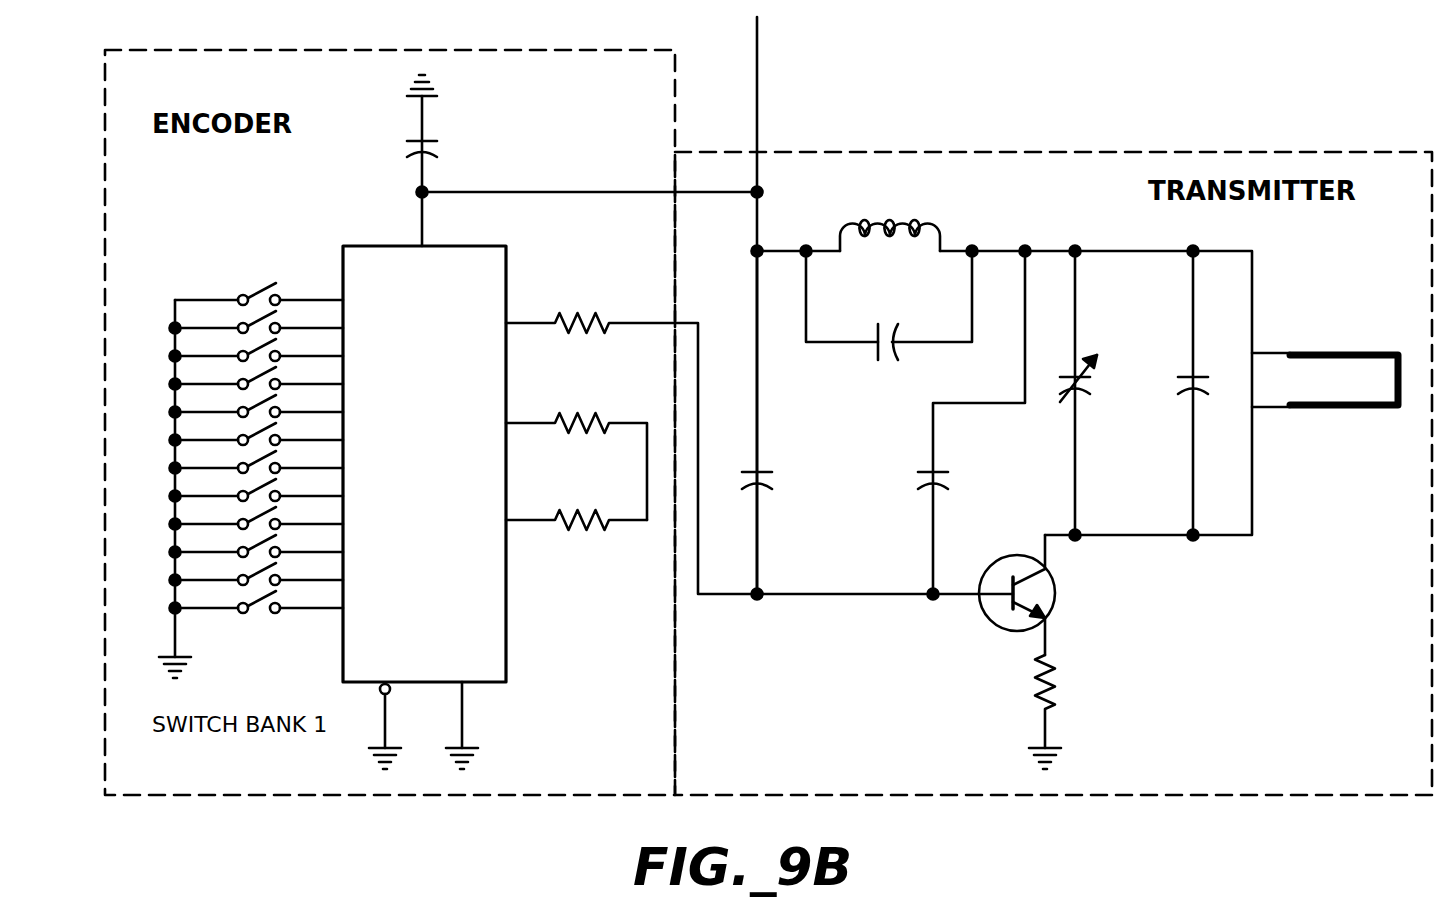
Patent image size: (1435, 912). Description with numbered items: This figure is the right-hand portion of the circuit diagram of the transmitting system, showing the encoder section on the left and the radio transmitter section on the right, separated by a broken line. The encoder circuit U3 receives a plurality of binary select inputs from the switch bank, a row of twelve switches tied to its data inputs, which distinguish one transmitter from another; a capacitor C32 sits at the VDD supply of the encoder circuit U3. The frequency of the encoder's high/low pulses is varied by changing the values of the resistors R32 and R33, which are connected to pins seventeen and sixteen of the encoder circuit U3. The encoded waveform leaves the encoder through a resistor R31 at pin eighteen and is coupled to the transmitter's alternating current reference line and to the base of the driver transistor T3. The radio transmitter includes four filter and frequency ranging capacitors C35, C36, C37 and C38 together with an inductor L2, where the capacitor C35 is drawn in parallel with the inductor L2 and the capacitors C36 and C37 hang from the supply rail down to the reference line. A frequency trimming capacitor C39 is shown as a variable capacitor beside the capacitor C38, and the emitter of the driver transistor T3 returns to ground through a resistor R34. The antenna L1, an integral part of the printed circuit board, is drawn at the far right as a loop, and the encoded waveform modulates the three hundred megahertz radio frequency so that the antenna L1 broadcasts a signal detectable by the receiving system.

The encoder circuit U3 is at (424, 480).
The capacitor C32 is at (450, 133).
The resistor R31 is at (759, 439).
The resistor R32 is at (576, 452).
The resistor R33 is at (576, 506).
The inductor L2 is at (890, 222).
The filter and frequency ranging capacitor C35 is at (889, 305).
The filter and frequency ranging capacitor C36 is at (786, 422).
The filter and frequency ranging capacitor C37 is at (971, 422).
The frequency trimming capacitor C39 is at (1104, 393).
The filter and frequency ranging capacitor C38 is at (1221, 393).
The antenna L1 is at (1325, 416).
The driver transistor T3 is at (1035, 595).
The resistor R34 is at (1072, 712).